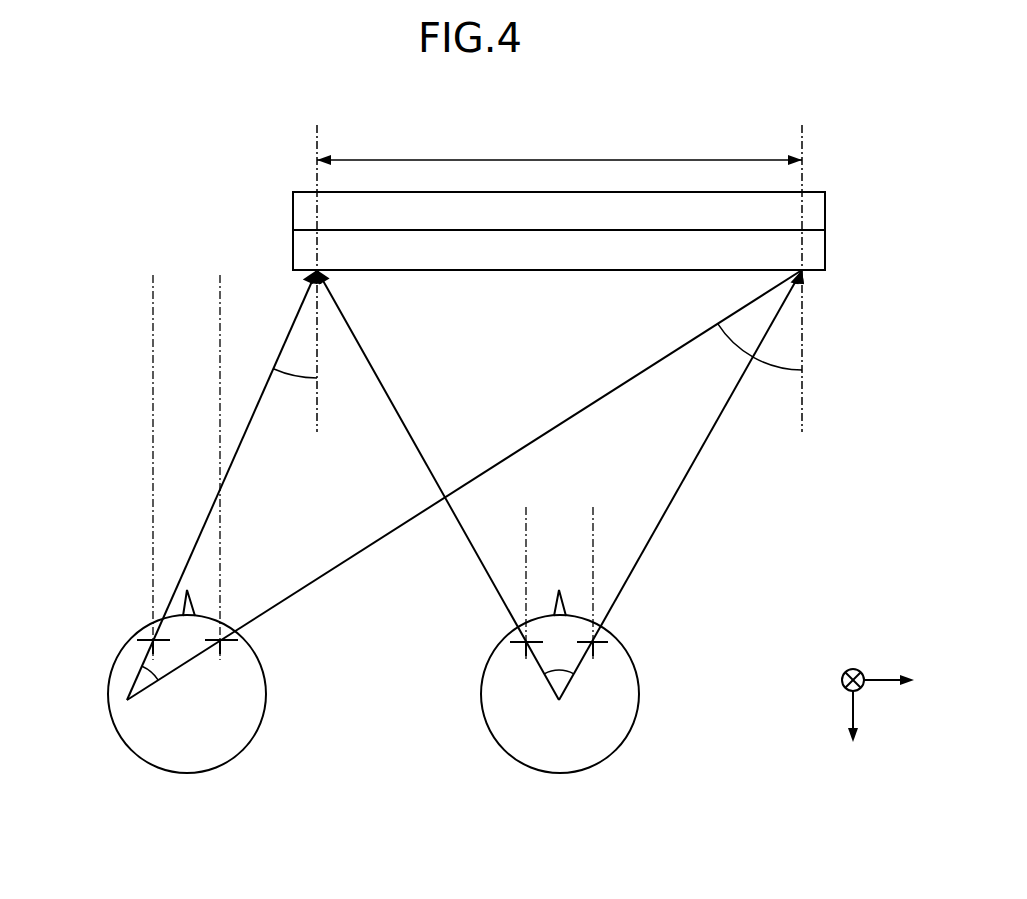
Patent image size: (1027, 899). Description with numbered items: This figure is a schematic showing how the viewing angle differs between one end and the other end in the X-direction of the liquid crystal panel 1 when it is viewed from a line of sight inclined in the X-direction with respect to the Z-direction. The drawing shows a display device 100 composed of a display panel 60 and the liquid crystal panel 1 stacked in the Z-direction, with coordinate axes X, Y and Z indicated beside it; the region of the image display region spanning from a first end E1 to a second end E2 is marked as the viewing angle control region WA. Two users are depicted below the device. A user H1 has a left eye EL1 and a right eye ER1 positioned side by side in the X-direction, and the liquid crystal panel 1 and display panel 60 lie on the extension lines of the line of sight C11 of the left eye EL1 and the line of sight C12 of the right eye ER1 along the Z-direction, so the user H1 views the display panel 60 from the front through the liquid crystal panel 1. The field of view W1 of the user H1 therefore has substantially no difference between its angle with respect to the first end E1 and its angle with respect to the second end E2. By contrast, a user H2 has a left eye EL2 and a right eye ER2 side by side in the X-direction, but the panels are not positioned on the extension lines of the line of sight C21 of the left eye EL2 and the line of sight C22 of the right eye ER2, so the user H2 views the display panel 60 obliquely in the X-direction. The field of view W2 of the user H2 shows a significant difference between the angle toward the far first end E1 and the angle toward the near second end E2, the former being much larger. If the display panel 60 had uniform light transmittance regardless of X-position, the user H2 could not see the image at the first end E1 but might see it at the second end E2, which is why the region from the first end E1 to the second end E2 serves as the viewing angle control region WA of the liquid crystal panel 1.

The display device 100 is at (298, 154).
The display panel 60 is at (815, 212).
The liquid crystal panel 1 is at (815, 250).
The viewing angle control region WA is at (559, 144).
The second end E2 is at (316, 292).
The first end E1 is at (800, 292).
The line of sight of the right eye ER2 C22 is at (152, 454).
The line of sight of the left eye EL2 C21 is at (217, 454).
The line of sight of the right eye ER1 C12 is at (525, 572).
The line of sight of the left eye EL1 C11 is at (592, 572).
The user H2 is at (145, 736).
The right eye ER2 is at (140, 651).
The left eye EL2 is at (233, 653).
The field of view W2 is at (153, 678).
The user H1 is at (508, 700).
The right eye ER1 is at (510, 651).
The left eye EL1 is at (605, 652).
The field of view W1 is at (560, 680).
The X-direction X is at (899, 681).
The Y-direction Y is at (843, 681).
The Z-direction Z is at (853, 730).